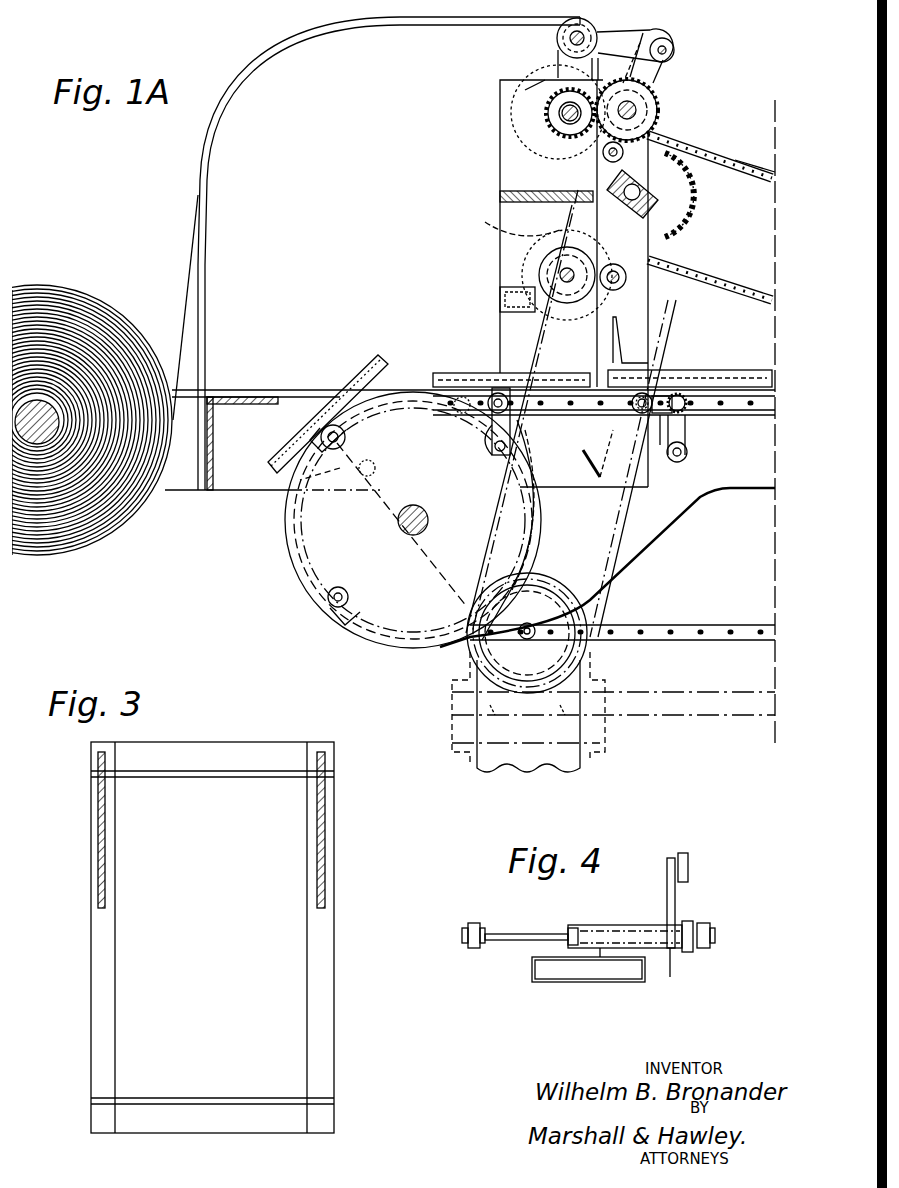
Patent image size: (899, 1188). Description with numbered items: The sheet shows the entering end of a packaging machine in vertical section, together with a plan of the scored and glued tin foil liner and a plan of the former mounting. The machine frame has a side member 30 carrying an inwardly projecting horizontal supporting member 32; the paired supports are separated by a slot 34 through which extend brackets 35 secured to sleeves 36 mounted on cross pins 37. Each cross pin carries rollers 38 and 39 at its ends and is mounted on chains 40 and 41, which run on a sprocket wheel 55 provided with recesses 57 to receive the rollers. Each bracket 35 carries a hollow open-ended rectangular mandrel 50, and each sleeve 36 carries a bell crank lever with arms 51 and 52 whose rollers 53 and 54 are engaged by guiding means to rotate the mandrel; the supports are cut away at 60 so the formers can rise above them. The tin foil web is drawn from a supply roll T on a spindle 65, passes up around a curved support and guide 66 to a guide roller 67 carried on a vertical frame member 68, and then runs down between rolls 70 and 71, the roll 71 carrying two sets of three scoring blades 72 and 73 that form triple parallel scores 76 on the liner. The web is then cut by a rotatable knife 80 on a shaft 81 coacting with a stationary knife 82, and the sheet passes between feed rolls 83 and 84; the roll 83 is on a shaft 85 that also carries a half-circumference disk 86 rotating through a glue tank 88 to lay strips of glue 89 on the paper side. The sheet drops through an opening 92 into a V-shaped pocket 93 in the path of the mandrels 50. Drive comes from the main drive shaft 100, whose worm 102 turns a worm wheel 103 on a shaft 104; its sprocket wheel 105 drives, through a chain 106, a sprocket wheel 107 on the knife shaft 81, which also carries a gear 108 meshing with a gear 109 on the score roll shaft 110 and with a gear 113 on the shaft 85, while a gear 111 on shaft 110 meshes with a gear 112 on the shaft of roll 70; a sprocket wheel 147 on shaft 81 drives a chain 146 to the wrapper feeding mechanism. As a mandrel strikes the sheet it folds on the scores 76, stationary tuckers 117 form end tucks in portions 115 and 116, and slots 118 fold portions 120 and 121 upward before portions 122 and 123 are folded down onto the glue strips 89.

In FIG. 1A, the supply roll T is at (112, 323).
In FIG. 1A, the side member 30 is at (178, 477).
In FIG. 1A, the horizontal supporting member 32 is at (327, 387).
In FIG. 1A, the slot 34 is at (725, 390).
In FIG. 1A, the bracket 35 is at (677, 388).
In FIG. 4, the bracket 35 is at (593, 947).
In FIG. 1A, the sleeve 36 is at (687, 408).
In FIG. 4, the sleeve 36 is at (617, 925).
In FIG. 1A, the cross pin 37 is at (685, 409).
In FIG. 4, the cross pin 37 is at (518, 935).
In FIG. 4, the roller 38 is at (473, 922).
In FIG. 1A, the roller 39 is at (707, 367).
In FIG. 4, the roller 39 is at (707, 925).
In FIG. 4, the chain 40 is at (463, 947).
In FIG. 1A, the chain 41 is at (757, 628).
In FIG. 4, the chain 41 is at (715, 945).
In FIG. 1A, the mandrel 50 is at (462, 380).
In FIG. 4, the mandrel 50 is at (598, 983).
In FIG. 1A, the bell crank lever arm 51 is at (660, 416).
In FIG. 4, the bell crank lever arm 51 is at (666, 975).
In FIG. 1A, the bell crank lever arm 52 is at (687, 440).
In FIG. 4, the bell crank lever arm 52 is at (668, 897).
In FIG. 1A, the roller 53 is at (642, 411).
In FIG. 4, the roller 53 is at (685, 952).
In FIG. 1A, the roller 54 is at (668, 463).
In FIG. 4, the roller 54 is at (687, 853).
In FIG. 1A, the sprocket wheel 55 is at (293, 544).
In FIG. 1A, the recess 57 is at (332, 587).
In FIG. 1A, the cut-away 60 is at (293, 393).
In FIG. 1A, the spindle 65 is at (33, 410).
In FIG. 1A, the curved support and guide 66 is at (210, 137).
In FIG. 1A, the guide roller 67 is at (598, 30).
In FIG. 1A, the vertical frame member 68 is at (500, 181).
In FIG. 1A, the roll 70 is at (650, 115).
In FIG. 1A, the scoring roll 71 is at (555, 105).
In FIG. 1A, the scoring blades 72 is at (588, 102).
In FIG. 1A, the scoring blades 73 is at (578, 68).
In FIG. 3, the parallel scores 76 is at (223, 759).
In FIG. 1A, the rotatable knife 80 is at (677, 192).
In FIG. 1A, the shaft 81 is at (690, 167).
In FIG. 1A, the stationary knife 82 is at (603, 195).
In FIG. 1A, the feed roll 83 is at (543, 258).
In FIG. 1A, the feed roll 84 is at (627, 282).
In FIG. 1A, the shaft 85 is at (567, 283).
In FIG. 1A, the disk 86 is at (540, 276).
In FIG. 1A, the well or tank 88 is at (513, 300).
In FIG. 3, the strips of glue 89 is at (100, 822).
In FIG. 1A, the opening 92 is at (592, 395).
In FIG. 1A, the V-shaped pocket 93 is at (598, 470).
In FIG. 1A, the main drive shaft 100 is at (660, 707).
In FIG. 1A, the worm 102 is at (473, 743).
In FIG. 1A, the worm wheel 103 is at (593, 667).
In FIG. 1A, the shaft 104 is at (535, 615).
In FIG. 1A, the sprocket wheel 105 is at (548, 578).
In FIG. 1A, the chain 106 is at (617, 573).
In FIG. 1A, the sprocket wheel 107 is at (563, 218).
In FIG. 1A, the gear 108 is at (665, 146).
In FIG. 1A, the gear 109 is at (548, 72).
In FIG. 1A, the shaft 110 is at (560, 115).
In FIG. 1A, the gear 111 is at (565, 120).
In FIG. 1A, the gear 112 is at (648, 90).
In FIG. 1A, the gear 113 is at (506, 222).
In FIG. 3, the end tuck portion 115 is at (98, 940).
In FIG. 3, the end tuck portion 116 is at (317, 937).
In FIG. 1A, the stationary tucker 117 is at (638, 383).
In FIG. 1A, the slot 118 is at (745, 367).
In FIG. 3, the blank portion 120 is at (100, 1025).
In FIG. 3, the blank portion 121 is at (323, 1038).
In FIG. 3, the blank portion 122 is at (93, 847).
In FIG. 3, the blank portion 123 is at (332, 848).
In FIG. 1A, the chain 146 is at (752, 157).
In FIG. 1A, the sprocket wheel 147 is at (677, 147).